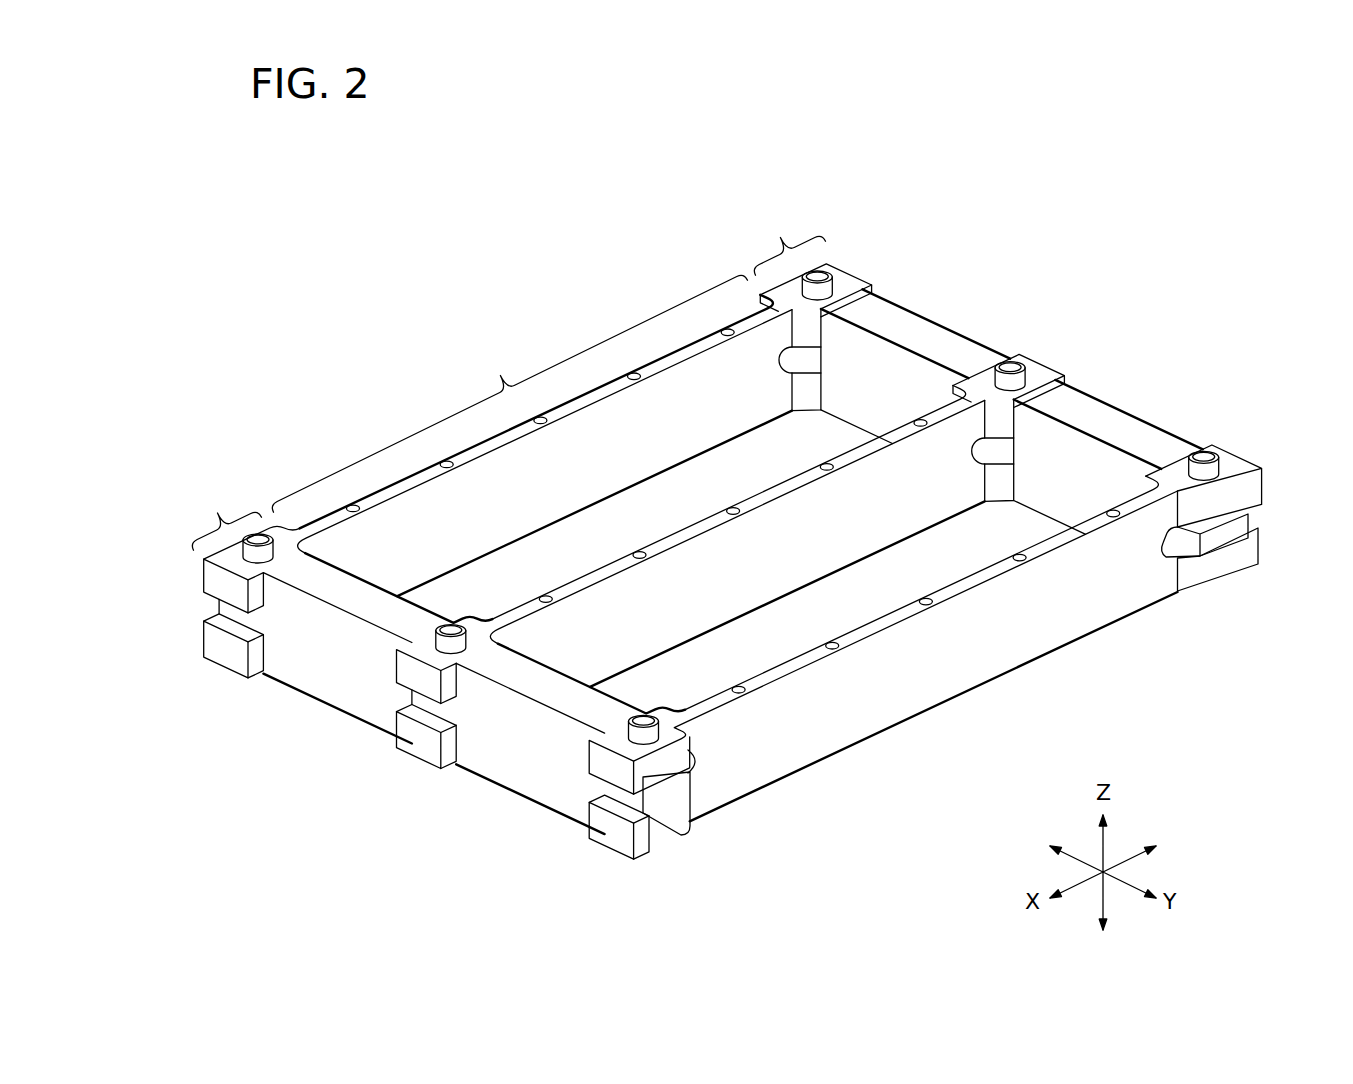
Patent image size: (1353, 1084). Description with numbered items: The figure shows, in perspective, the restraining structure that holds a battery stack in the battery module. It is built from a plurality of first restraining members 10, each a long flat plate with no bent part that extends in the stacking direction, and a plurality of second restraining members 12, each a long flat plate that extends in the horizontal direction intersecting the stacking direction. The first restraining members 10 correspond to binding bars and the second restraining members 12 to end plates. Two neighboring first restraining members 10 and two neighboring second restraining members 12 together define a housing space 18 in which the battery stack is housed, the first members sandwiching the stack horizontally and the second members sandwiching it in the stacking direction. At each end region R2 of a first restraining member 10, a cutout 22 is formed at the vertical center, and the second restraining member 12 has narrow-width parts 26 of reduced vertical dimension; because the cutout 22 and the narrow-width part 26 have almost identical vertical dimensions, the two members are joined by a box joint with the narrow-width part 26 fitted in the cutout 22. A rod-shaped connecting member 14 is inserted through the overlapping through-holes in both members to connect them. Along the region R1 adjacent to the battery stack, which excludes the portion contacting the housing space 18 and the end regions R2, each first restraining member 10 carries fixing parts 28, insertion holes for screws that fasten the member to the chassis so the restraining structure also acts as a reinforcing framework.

The first restraining member 10 is at (840, 266).
The second restraining member 12 is at (1125, 418).
The connecting member 14 is at (1212, 448).
The housing space 18 is at (808, 446).
The cutout 22 is at (248, 652).
The narrow-width part 26 is at (212, 606).
The fixing part 28 is at (937, 604).
The region R1 is at (509, 393).
The region R2 is at (508, 381).